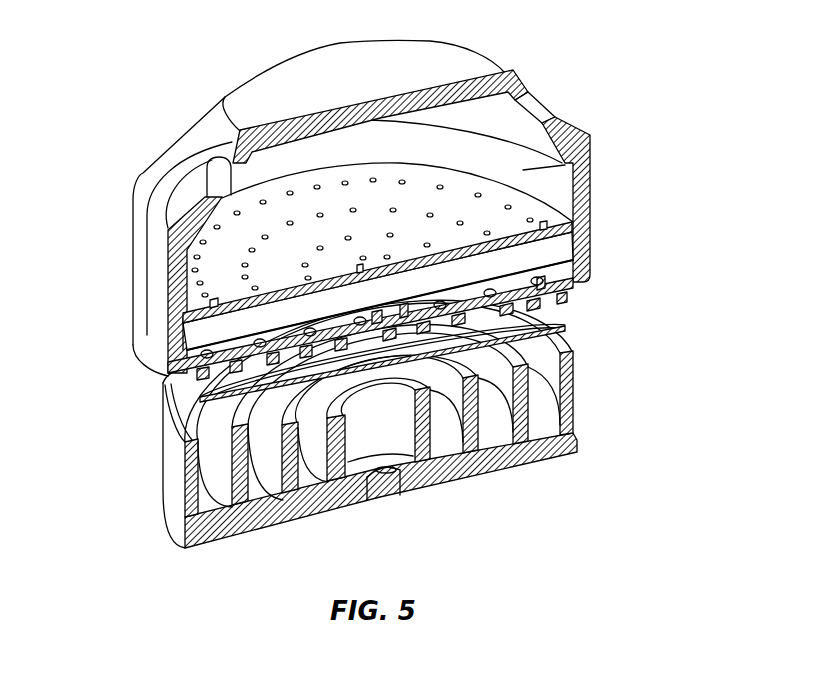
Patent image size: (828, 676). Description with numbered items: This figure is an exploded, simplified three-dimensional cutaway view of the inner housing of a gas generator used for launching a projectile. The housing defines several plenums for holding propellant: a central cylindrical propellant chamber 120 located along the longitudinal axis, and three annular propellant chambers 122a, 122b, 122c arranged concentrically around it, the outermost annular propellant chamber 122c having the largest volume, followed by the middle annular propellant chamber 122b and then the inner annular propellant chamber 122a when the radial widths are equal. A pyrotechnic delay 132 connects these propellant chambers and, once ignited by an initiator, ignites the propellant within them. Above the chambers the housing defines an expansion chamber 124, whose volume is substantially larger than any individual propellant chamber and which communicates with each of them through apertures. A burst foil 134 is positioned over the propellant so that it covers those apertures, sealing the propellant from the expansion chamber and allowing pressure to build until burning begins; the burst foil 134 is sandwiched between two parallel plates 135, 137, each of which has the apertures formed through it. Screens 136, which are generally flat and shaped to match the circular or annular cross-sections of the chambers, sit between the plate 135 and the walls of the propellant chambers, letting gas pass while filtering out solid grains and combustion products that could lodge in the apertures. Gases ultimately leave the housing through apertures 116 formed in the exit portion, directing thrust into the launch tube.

The apertures 116 is at (537, 115).
The expansion chamber 124 is at (587, 138).
The parallel plate 137 is at (523, 208).
The burst foil 134 is at (547, 253).
The parallel plate 135 is at (557, 300).
The screens 136 is at (543, 327).
The pyrotechnic delay 132 is at (480, 460).
The cylindrical propellant chamber 120 is at (360, 472).
The inner annular propellant chamber 122a is at (306, 470).
The middle annular propellant chamber 122b is at (255, 488).
The outermost annular propellant chamber 122c is at (205, 497).